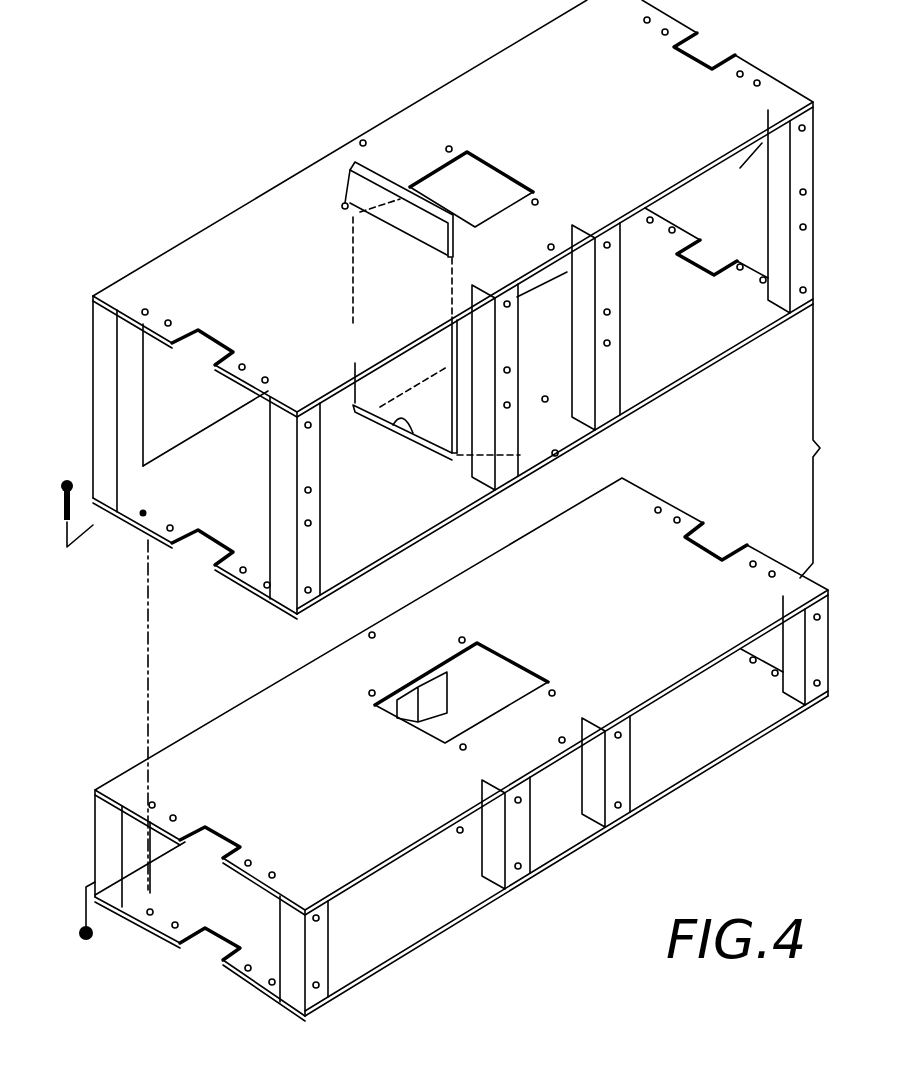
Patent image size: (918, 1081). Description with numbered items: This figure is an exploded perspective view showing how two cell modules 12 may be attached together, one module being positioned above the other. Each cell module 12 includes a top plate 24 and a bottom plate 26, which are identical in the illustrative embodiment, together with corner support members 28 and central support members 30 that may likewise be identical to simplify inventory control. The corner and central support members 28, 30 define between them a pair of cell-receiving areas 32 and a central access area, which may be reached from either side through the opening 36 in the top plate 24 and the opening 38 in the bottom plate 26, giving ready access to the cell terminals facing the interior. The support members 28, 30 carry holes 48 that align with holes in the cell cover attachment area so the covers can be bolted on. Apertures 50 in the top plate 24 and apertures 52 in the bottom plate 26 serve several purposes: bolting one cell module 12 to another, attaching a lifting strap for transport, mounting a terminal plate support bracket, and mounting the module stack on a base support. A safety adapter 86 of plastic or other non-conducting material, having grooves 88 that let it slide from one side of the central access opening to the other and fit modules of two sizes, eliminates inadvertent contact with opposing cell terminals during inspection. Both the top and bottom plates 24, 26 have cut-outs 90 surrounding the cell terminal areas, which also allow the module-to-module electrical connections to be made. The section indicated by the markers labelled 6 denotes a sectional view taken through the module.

The cell module 12 is at (188, 226).
The top plate 24 is at (660, 158).
The bottom plate 26 is at (406, 933).
The corner support members 28 is at (786, 318).
The central support members 30 is at (630, 412).
The cell-receiving areas 32 is at (714, 344).
The opening in the top plate 36 is at (520, 182).
The opening in the bottom plate 38 is at (538, 388).
The holes 48 is at (808, 128).
The apertures in the top plate 50 is at (448, 145).
The apertures in the base plate 52 is at (760, 283).
The safety adapter 86 is at (345, 162).
The grooves 88 is at (211, 780).
The cut-outs 90 is at (707, 55).
The section line 6- 6 is at (530, 283).